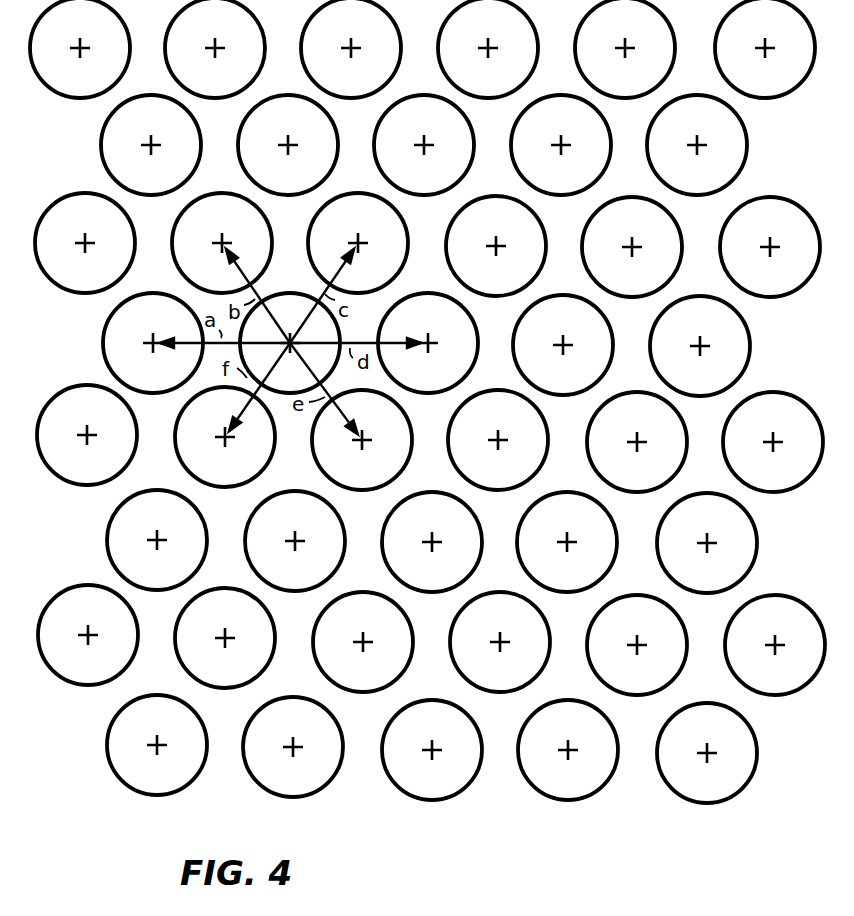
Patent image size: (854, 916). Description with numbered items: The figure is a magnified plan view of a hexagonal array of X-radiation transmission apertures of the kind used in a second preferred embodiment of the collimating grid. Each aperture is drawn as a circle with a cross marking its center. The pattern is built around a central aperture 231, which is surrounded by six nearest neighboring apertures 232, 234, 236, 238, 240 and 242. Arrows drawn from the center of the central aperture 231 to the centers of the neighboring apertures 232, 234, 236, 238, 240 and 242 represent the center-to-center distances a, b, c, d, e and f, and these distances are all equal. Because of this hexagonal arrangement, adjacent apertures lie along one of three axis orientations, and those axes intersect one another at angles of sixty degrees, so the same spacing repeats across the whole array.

The central aperture 231 is at (290, 306).
The nearest neighboring aperture 232 is at (104, 342).
The nearest neighboring aperture 234 is at (193, 220).
The nearest neighboring aperture 236 is at (400, 236).
The nearest neighboring aperture 238 is at (468, 338).
The nearest neighboring aperture 240 is at (403, 448).
The nearest neighboring aperture 242 is at (192, 458).